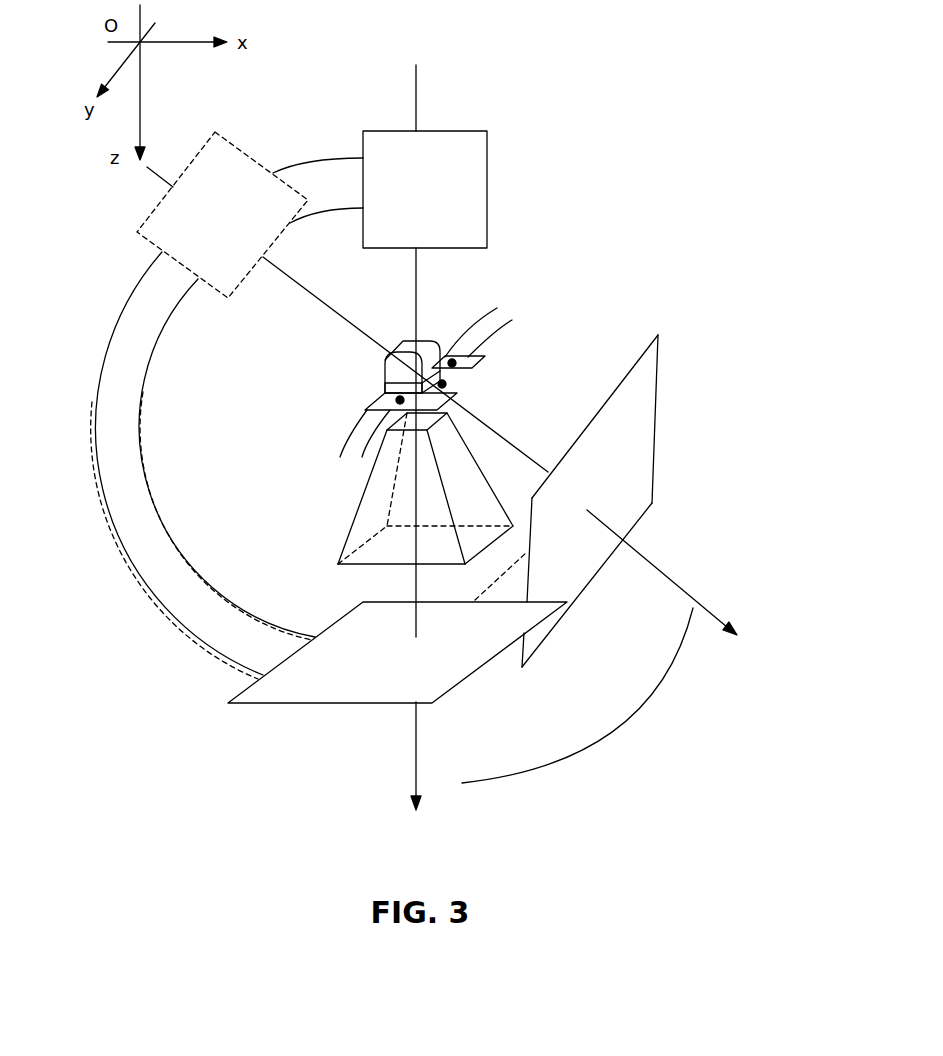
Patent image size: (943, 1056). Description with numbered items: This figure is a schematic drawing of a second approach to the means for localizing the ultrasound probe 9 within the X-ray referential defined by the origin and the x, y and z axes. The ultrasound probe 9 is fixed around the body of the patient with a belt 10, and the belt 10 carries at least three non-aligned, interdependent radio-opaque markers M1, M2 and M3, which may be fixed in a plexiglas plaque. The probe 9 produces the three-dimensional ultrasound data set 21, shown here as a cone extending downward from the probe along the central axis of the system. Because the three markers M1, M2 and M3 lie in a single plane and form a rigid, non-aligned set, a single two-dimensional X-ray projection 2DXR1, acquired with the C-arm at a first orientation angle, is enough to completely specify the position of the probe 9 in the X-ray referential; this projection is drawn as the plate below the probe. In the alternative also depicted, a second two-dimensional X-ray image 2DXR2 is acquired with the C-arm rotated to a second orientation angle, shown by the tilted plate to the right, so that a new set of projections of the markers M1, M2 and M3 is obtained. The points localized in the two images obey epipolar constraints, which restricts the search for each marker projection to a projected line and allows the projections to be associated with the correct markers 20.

The ultrasound probe 9 is at (383, 360).
The belt 10 is at (512, 320).
The sample stage 20 is at (383, 388).
The 3D ultrasound data set 21 is at (353, 528).
The radio-opaque marker M1 is at (456, 363).
The radio-opaque marker M2 is at (446, 384).
The radio-opaque marker M3 is at (404, 400).
The 2D X-ray projection 2DXR1 is at (310, 693).
The second 2D X-ray image 2DXR2 is at (658, 335).